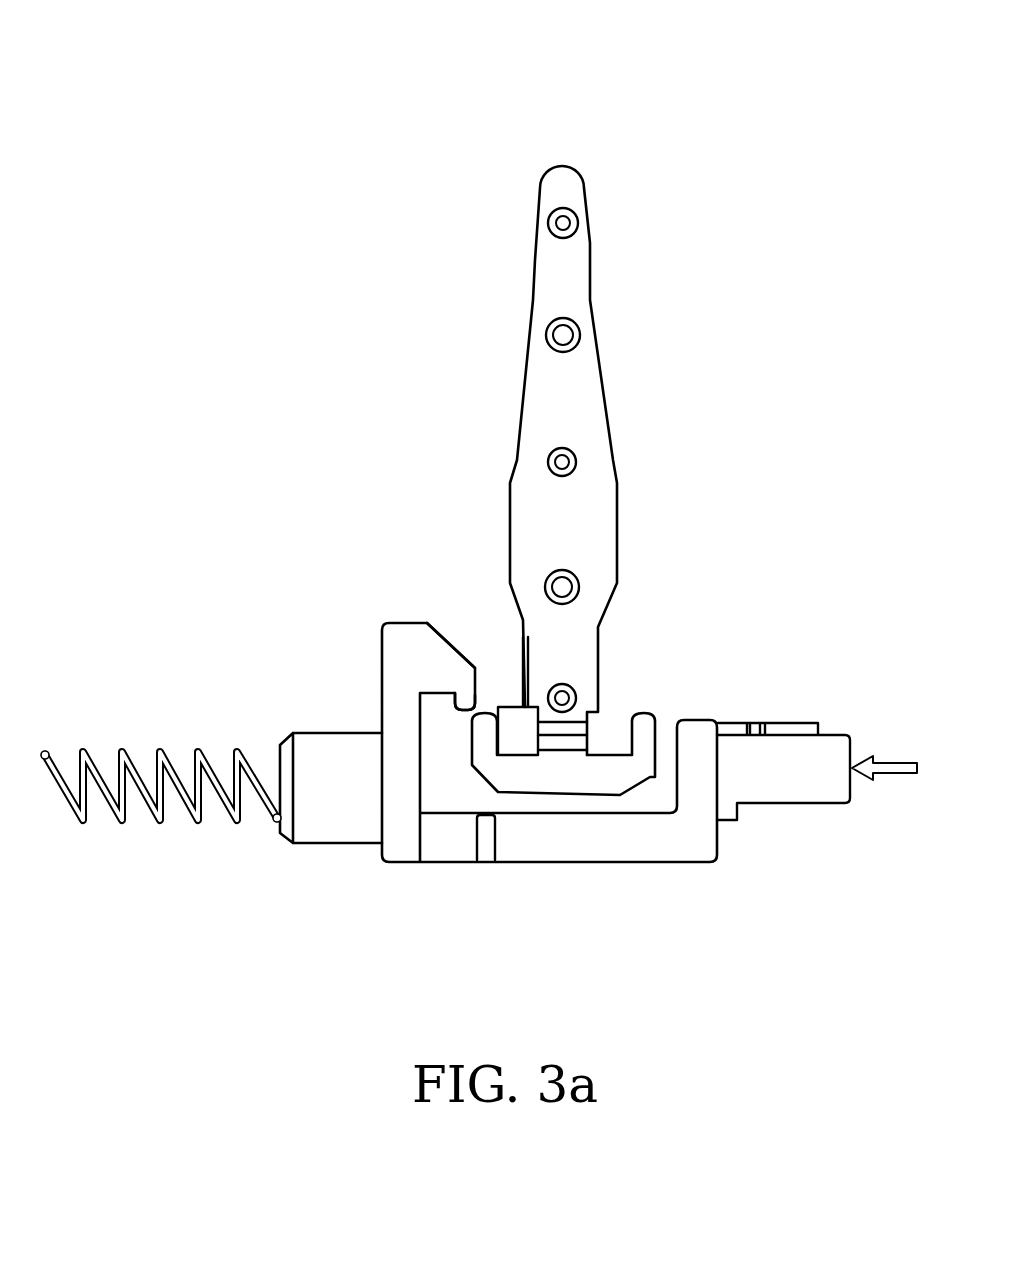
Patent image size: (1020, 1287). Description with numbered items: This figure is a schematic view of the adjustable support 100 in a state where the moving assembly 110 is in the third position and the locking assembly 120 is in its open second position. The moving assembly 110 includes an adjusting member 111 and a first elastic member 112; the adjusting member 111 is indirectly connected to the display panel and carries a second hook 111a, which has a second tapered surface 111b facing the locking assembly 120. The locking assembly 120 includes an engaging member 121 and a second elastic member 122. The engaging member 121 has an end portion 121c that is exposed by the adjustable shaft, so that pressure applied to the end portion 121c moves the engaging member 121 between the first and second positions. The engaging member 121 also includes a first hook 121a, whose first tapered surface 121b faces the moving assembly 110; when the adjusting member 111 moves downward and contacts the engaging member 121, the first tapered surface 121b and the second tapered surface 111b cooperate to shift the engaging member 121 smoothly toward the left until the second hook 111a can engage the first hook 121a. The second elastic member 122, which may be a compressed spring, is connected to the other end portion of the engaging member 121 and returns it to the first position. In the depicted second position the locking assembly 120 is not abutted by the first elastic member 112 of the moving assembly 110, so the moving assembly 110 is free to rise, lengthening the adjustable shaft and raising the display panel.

The card connector 100 is at (282, 102).
The moving assembly 110 is at (408, 384).
The adjusting member 111 is at (523, 398).
The second hook 111a is at (482, 743).
The second tapered surface 111b is at (488, 783).
The first elastic member 112 is at (513, 725).
The locking assembly 120 is at (290, 632).
The engaging member 121 is at (302, 733).
The first hook 121a is at (467, 690).
The first tapered surface 121b is at (453, 643).
The end portion 121c is at (832, 733).
The second elastic member 122 is at (183, 757).